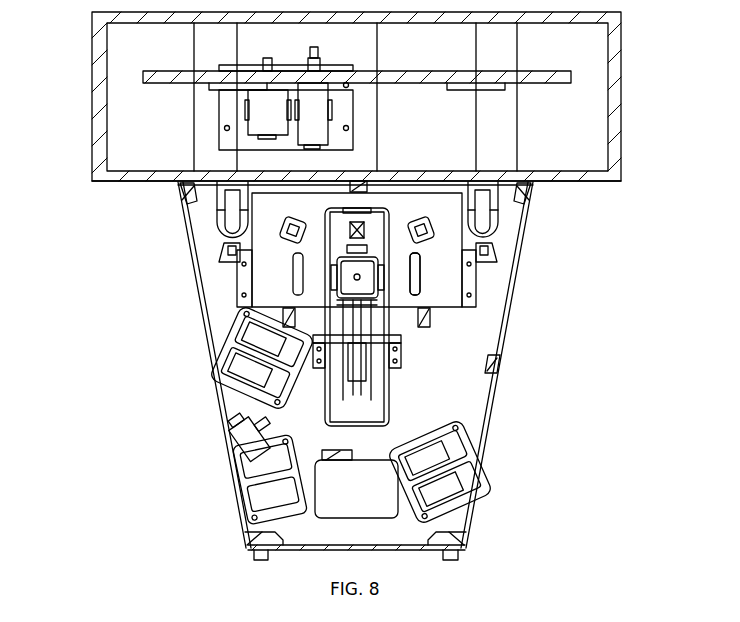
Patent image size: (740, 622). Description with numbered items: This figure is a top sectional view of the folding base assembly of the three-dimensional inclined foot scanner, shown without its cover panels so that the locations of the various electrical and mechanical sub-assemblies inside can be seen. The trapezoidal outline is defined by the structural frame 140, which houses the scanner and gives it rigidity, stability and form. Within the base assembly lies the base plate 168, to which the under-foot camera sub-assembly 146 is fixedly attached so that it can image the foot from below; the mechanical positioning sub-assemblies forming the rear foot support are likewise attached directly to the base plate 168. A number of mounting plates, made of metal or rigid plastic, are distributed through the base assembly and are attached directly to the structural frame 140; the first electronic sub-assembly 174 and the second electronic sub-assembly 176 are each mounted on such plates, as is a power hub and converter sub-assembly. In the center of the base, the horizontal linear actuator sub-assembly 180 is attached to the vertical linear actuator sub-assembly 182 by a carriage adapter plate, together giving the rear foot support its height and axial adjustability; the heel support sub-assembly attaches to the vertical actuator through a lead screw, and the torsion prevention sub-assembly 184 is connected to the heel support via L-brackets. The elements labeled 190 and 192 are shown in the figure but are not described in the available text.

The structural frame 140 is at (500, 362).
The under-foot camera sub-assembly 146 is at (493, 252).
The base plate 168 is at (507, 230).
The first electronic sub-assembly 174 is at (238, 430).
The second electronic sub-assembly 176 is at (245, 341).
The horizontal linear actuator sub-assembly 180 is at (395, 364).
The vertical linear actuator sub-assembly 182 is at (325, 280).
The torsion prevention sub-assembly 184 is at (390, 275).
The panel 190 is at (265, 275).
The slot 192 is at (420, 289).